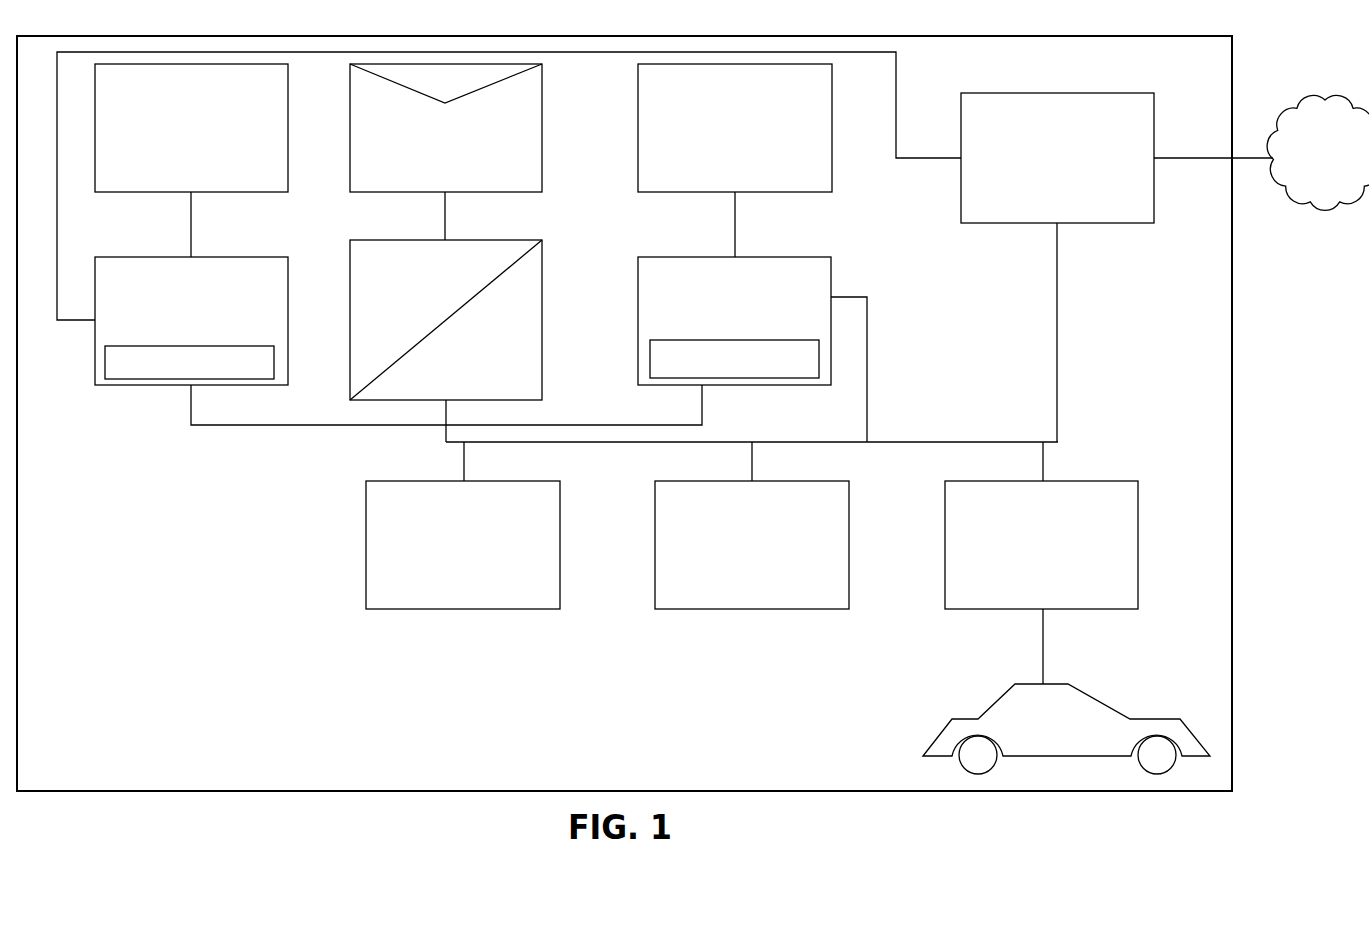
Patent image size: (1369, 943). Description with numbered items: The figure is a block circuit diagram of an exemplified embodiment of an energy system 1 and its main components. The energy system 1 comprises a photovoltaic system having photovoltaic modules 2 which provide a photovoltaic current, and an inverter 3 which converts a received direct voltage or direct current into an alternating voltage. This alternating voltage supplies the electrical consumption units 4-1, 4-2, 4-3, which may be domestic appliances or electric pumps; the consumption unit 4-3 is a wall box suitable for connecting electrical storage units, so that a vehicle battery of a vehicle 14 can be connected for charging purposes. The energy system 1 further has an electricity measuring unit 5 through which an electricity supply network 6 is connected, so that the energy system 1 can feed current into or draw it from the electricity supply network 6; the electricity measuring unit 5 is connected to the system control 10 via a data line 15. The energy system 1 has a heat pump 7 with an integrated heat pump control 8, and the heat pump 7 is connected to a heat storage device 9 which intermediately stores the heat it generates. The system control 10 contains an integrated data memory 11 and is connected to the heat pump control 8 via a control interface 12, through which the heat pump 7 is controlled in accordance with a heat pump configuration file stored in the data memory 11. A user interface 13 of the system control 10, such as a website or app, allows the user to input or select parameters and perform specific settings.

The energy system 1 is at (1232, 603).
The photovoltaic modules 2 is at (446, 152).
The inverter 3 is at (350, 239).
The electrical consumption unit 4-1 is at (463, 525).
The electrical consumption unit 4-2 is at (752, 525).
The electrical consumption unit (wall box) 4-3 is at (1041, 525).
The electricity measuring unit 5 is at (1117, 267).
The electricity supply network 6 is at (1318, 152).
The heat pump 7 is at (752, 349).
The heat pump control 8 is at (734, 359).
The heat storage device 9 is at (735, 160).
The system control 10 is at (191, 321).
The data memory 11 is at (189, 362).
The control interface 12 is at (632, 424).
The user interface 13 is at (191, 160).
The vehicle 14 is at (1066, 691).
The data line 15 is at (896, 158).